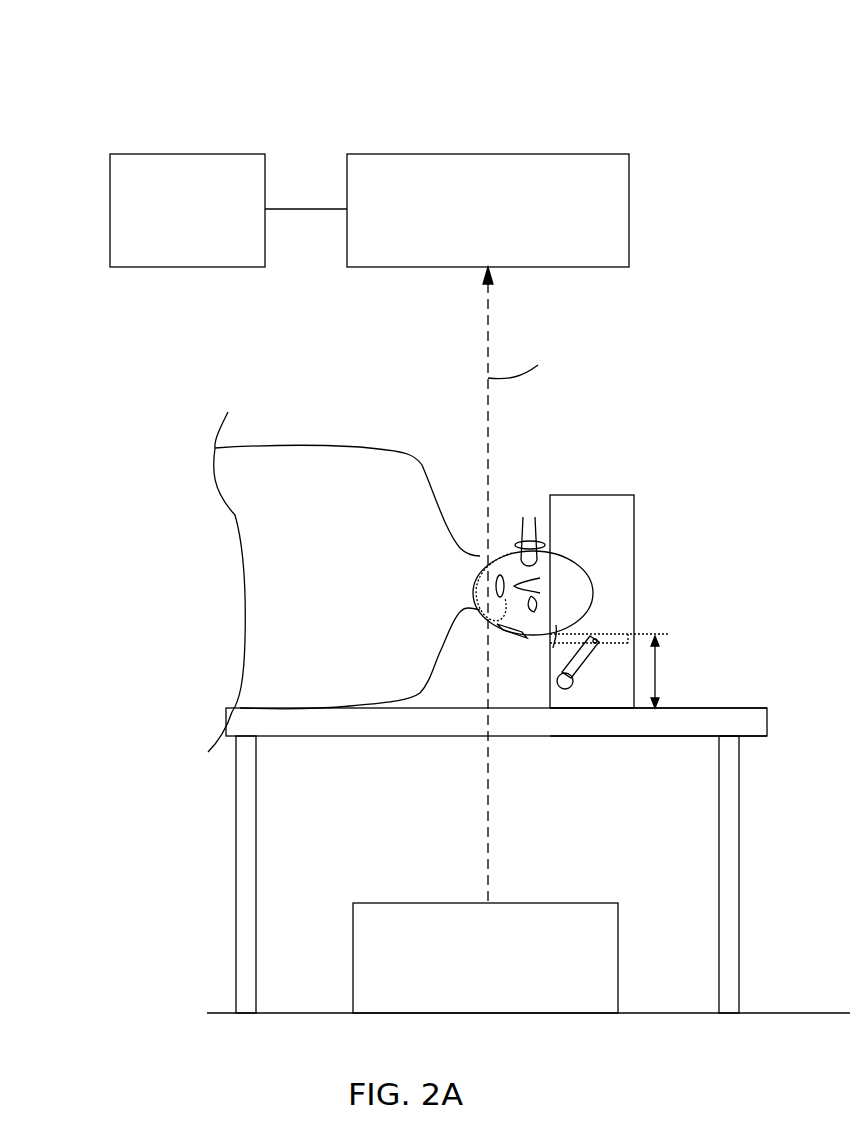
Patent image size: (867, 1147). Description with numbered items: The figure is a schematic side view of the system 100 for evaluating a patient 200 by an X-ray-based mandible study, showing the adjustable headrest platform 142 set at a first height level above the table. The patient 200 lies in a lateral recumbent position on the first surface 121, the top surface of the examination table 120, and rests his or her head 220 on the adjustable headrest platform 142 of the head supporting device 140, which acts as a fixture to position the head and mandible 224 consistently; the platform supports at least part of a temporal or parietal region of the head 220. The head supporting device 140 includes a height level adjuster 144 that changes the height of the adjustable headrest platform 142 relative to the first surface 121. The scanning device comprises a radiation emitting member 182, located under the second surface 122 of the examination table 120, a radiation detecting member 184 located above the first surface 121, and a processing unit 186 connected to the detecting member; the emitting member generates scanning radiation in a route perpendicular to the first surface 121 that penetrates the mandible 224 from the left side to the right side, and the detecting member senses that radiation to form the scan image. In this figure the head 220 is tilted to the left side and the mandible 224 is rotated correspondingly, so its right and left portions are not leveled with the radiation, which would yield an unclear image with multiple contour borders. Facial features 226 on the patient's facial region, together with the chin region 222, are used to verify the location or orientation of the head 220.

The system 100 is at (731, 41).
The processing unit 186 is at (207, 154).
The radiation detecting member 184 is at (629, 215).
The radiation emitting member 182 is at (618, 945).
The patient 200 is at (382, 468).
The head 220 is at (559, 552).
The mandible 224 is at (478, 576).
The facial features 226 is at (540, 548).
The chin 222 is at (556, 630).
The head supporting device 140 is at (605, 494).
The adjustable headrest platform 142 is at (600, 633).
The height level adjuster 144 is at (573, 683).
The examination table 120 is at (752, 720).
The first surface 121 is at (692, 708).
The second surface 122 is at (650, 738).